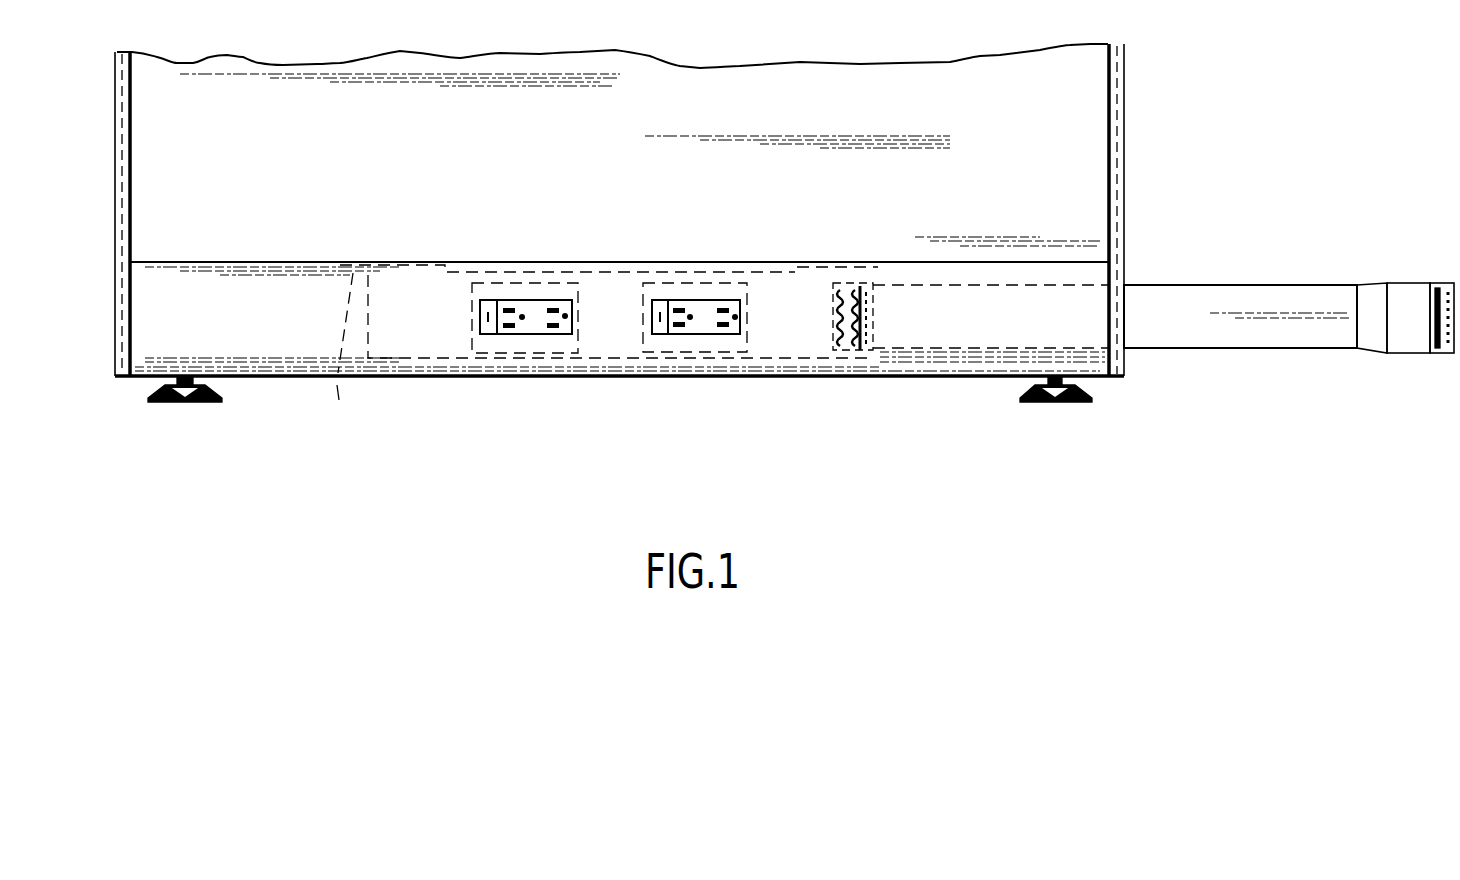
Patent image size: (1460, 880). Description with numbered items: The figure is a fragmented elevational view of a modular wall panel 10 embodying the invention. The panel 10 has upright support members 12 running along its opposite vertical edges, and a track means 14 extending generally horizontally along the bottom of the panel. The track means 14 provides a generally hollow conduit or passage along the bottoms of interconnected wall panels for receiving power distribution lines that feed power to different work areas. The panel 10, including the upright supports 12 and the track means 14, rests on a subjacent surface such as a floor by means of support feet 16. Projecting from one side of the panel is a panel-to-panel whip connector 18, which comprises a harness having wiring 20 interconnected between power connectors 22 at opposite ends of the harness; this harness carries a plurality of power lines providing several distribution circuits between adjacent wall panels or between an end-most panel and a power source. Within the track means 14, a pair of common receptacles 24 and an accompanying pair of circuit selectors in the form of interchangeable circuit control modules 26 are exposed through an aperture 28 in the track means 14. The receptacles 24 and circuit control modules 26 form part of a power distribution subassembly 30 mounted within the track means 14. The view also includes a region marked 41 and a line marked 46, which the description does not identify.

The modular wall panel 10 is at (592, 70).
The upright support members 12 is at (118, 175).
The track means 14 is at (960, 270).
The support feet 16 is at (203, 400).
The whip connector 18 is at (1193, 285).
The wiring 20 is at (1208, 330).
The power connectors 22 is at (867, 268).
The common receptacles 24 is at (528, 310).
The circuit control modules 26 is at (484, 304).
The aperture 28 is at (722, 307).
The power distribution subassembly 30 is at (580, 270).
The storage compartment 41 is at (240, 323).
The partition 46 is at (352, 355).